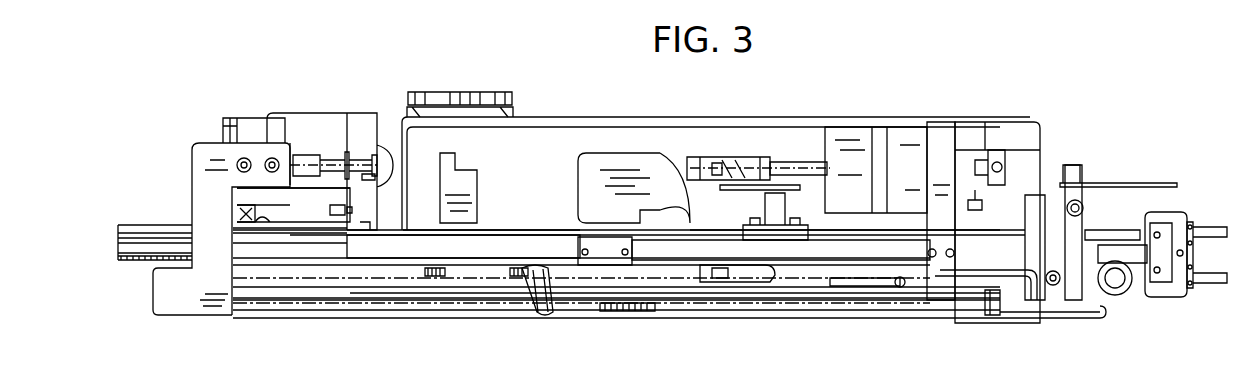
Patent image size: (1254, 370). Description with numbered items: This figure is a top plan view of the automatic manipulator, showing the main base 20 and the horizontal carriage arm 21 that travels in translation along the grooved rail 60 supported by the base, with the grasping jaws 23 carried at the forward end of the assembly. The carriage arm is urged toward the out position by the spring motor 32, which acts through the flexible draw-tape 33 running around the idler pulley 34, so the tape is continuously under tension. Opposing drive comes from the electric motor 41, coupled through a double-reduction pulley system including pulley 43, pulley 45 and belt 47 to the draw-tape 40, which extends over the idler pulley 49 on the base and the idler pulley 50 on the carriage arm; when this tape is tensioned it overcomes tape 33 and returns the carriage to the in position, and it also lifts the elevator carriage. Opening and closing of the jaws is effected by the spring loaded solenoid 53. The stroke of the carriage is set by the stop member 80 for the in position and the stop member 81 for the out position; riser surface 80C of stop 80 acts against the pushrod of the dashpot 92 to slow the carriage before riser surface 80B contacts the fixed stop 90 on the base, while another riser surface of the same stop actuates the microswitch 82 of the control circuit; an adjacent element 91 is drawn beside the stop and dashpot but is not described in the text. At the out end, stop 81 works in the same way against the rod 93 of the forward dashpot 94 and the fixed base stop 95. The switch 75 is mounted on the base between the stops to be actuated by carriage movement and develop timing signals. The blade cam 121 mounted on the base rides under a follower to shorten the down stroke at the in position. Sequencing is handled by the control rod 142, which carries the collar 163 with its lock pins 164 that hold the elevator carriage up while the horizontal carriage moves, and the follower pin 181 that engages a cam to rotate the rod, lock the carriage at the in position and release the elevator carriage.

The main base 20 is at (197, 300).
The carriage arm 21 is at (135, 261).
The grasping jaws 23 is at (1217, 231).
The spring motor 32 is at (620, 160).
The draw-tape 33 is at (455, 270).
The idler pulley 34 is at (760, 270).
The draw-tape 40 is at (958, 215).
The electric motor 41 is at (480, 108).
The pulley 43 is at (698, 156).
The pulley 45 is at (628, 312).
The belt 47 is at (682, 163).
The idler pulley 49 is at (975, 203).
The idler pulley 50 is at (1013, 200).
The spring loaded solenoid 53 is at (1130, 250).
The grooved rail 60 is at (118, 242).
The switch 75 is at (586, 242).
The stop member 80 is at (382, 165).
The second riser surface 80B is at (352, 211).
The riser surface 80C is at (372, 177).
The stop member 81 is at (458, 188).
The microswitch 82 is at (237, 216).
The fixed stop 90 is at (332, 200).
The bracket 91 is at (365, 160).
The dashpot 92 is at (255, 122).
The rod 93 is at (713, 167).
The forward dashpot 94 is at (852, 142).
The fixed base stop 95 is at (778, 205).
The blade cam 121 is at (1125, 185).
The control rod 142 is at (688, 297).
The collar 163 is at (1000, 322).
The lock pins 164 is at (1012, 310).
The follower pin 181 is at (844, 282).